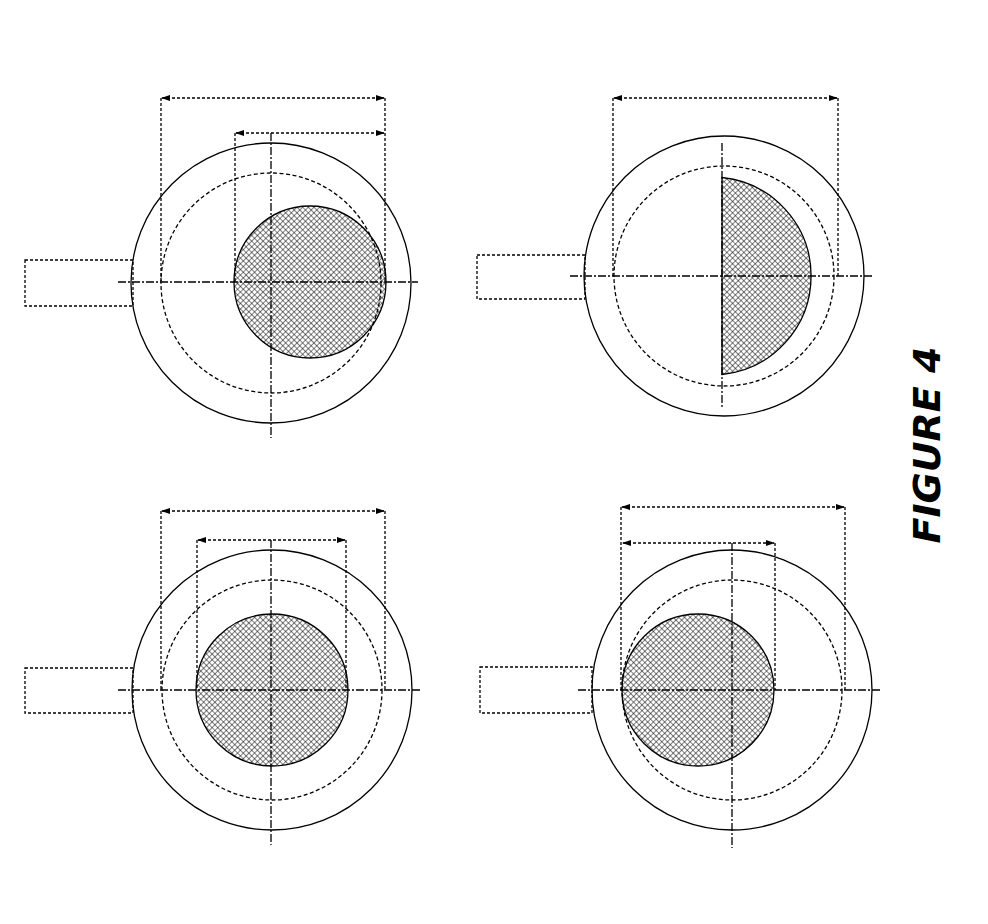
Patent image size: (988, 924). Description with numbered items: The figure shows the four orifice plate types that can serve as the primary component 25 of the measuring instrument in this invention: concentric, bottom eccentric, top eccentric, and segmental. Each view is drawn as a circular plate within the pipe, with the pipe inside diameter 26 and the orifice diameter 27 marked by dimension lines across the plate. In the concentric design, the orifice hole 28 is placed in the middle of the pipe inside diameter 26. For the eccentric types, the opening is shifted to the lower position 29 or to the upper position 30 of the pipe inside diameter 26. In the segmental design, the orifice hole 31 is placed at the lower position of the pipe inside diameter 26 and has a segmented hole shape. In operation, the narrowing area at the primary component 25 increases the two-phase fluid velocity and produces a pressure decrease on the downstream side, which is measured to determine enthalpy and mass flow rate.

The primary component 25 is at (153, 220).
The pipe inside diameter 26 is at (218, 82).
The orifice diameter 27 is at (374, 120).
The orifice hole 28 is at (323, 742).
The lower position orifice hole 29 is at (360, 220).
The upper position orifice hole 30 is at (657, 623).
The segmented orifice hole 31 is at (790, 202).